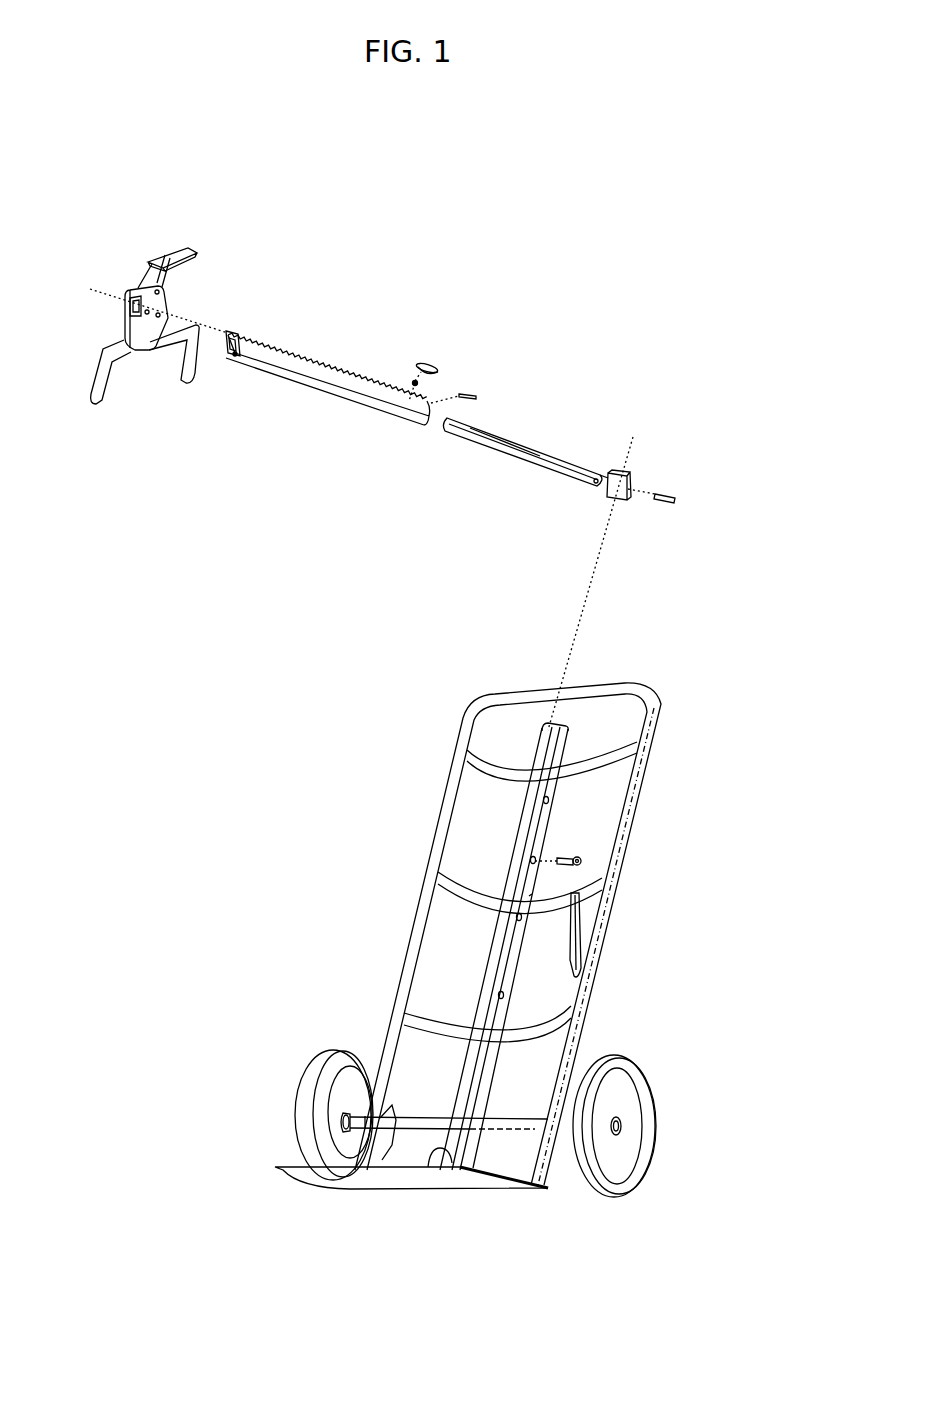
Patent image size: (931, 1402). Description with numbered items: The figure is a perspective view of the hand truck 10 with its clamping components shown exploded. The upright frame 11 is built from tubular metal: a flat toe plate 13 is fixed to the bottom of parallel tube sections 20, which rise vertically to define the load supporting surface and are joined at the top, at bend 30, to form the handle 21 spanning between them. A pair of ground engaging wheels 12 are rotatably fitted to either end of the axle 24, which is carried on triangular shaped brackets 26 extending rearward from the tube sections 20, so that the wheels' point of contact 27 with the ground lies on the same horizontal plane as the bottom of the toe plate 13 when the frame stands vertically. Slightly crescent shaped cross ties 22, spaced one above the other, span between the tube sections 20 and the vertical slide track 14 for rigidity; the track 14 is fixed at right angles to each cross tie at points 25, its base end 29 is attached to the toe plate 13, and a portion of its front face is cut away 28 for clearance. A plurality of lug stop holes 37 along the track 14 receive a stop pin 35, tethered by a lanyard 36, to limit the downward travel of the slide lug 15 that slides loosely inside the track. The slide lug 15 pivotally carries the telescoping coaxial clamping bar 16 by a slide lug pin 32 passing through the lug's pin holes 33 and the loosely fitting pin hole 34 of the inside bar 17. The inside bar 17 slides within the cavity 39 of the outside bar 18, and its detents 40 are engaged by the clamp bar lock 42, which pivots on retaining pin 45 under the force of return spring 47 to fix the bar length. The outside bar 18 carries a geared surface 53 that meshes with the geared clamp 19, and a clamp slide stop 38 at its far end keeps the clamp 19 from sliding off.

The hand truck 10 is at (522, 190).
The upright frame 11 is at (305, 818).
The wheels 12 is at (298, 1115).
The toe plate 13 is at (400, 1193).
The vertical slide track 14 is at (560, 768).
The slide lug 15 is at (627, 480).
The telescoping coaxial clamping bar 16 is at (382, 475).
The inside bar 17 is at (573, 468).
The outside bar 18 is at (297, 363).
The geared clamp 19 is at (67, 307).
The parallel tube sections 20 is at (397, 1047).
The handle 21 is at (528, 694).
The cross ties 22 is at (430, 875).
The axle 24 is at (478, 1123).
The attachment points 25 is at (531, 897).
The triangular shaped brackets 26 is at (395, 1075).
The point of contact 27 is at (313, 1200).
The cut away portion 28 is at (552, 738).
The base end 29 is at (427, 1168).
The bend 30 is at (463, 716).
The slide lug pin 32 is at (655, 494).
The slide lug pin holes 33 is at (627, 490).
The pin hole 34 is at (595, 487).
The stop pin 35 is at (580, 866).
The lanyard 36 is at (577, 935).
The lug stop holes 37 is at (560, 803).
The clamp slide stop 38 is at (235, 356).
The cavity 39 is at (228, 347).
The detents 40 is at (538, 462).
The clamp bar lock 42 is at (433, 362).
The retaining pin 45 is at (466, 393).
The return spring 47 is at (415, 383).
The geared surface 53 is at (265, 342).